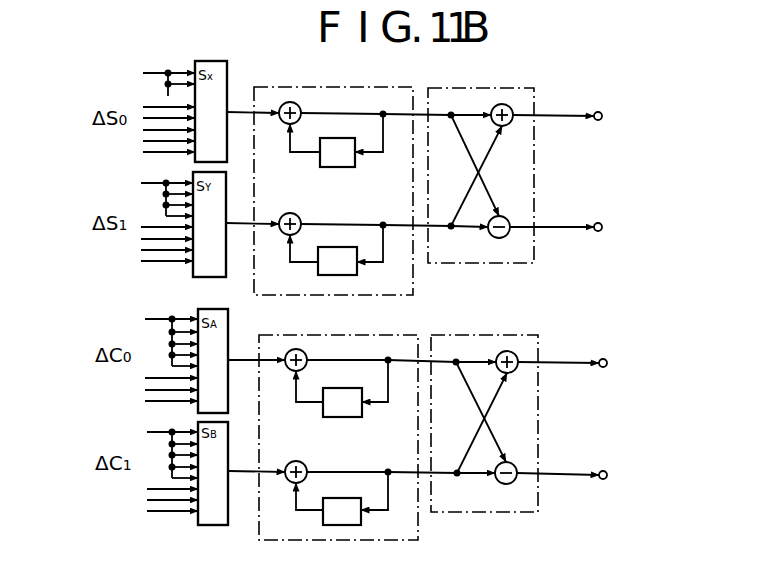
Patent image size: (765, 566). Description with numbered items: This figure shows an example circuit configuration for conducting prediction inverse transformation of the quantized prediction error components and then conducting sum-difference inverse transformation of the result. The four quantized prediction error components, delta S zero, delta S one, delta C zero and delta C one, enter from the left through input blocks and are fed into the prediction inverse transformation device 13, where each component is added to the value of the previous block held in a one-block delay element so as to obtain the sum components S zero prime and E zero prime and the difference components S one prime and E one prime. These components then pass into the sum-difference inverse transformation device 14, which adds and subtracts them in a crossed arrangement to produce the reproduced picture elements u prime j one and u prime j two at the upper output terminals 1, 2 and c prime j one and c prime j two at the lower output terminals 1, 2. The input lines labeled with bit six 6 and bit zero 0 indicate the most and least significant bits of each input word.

The prediction inverse transformation device 13 is at (384, 88).
The sum-difference inverse transformation device 14 is at (520, 88).
The most significant bit inputs (X6, Y6, A6, B6) 6 is at (191, 267).
The least significant bit inputs (X0, Y0, A0, B0) 0 is at (180, 334).
The j1 output terminals (U'j1, C'j1) 1 is at (579, 241).
The j2 output terminals (U'j2, C'j2) 2 is at (577, 353).